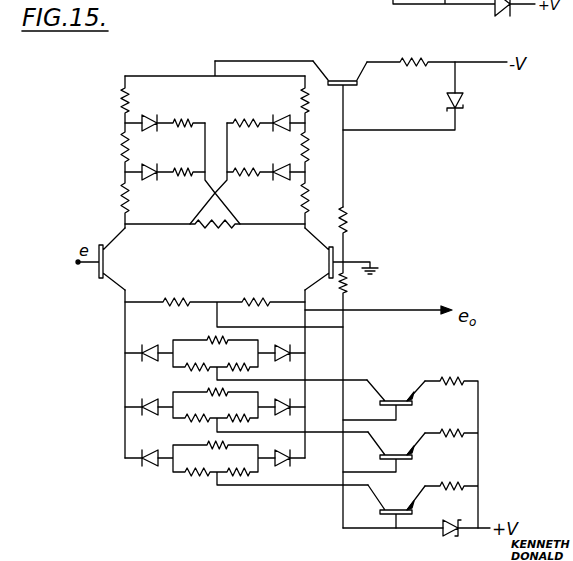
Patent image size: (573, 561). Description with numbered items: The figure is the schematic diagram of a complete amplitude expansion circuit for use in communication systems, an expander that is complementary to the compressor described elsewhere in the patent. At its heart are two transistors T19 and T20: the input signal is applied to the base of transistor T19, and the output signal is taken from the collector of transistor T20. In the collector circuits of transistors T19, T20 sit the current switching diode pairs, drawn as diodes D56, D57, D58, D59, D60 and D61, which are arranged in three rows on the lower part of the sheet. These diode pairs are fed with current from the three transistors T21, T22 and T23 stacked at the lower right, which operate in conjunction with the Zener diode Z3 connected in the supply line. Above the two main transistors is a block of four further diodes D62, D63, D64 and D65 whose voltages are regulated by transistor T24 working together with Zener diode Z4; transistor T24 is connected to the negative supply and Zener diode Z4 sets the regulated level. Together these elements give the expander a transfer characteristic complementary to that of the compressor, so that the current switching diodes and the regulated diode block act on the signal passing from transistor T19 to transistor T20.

The current switching diode D56 is at (149, 345).
The current switching diode D57 is at (278, 348).
The current switching diode D58 is at (150, 398).
The current switching diode D59 is at (284, 398).
The current switching diode D60 is at (145, 448).
The current switching diode D61 is at (279, 465).
The diode D62 is at (157, 113).
The diode D63 is at (157, 163).
The diode D64 is at (272, 113).
The diode D65 is at (272, 163).
The transistor T19 is at (110, 259).
The transistor T20 is at (329, 259).
The transistor T21 is at (384, 398).
The transistor T22 is at (384, 451).
The transistor T23 is at (396, 506).
The transistor T24 is at (340, 131).
The Zener diode Z3 is at (454, 517).
The Zener diode Z4 is at (471, 105).